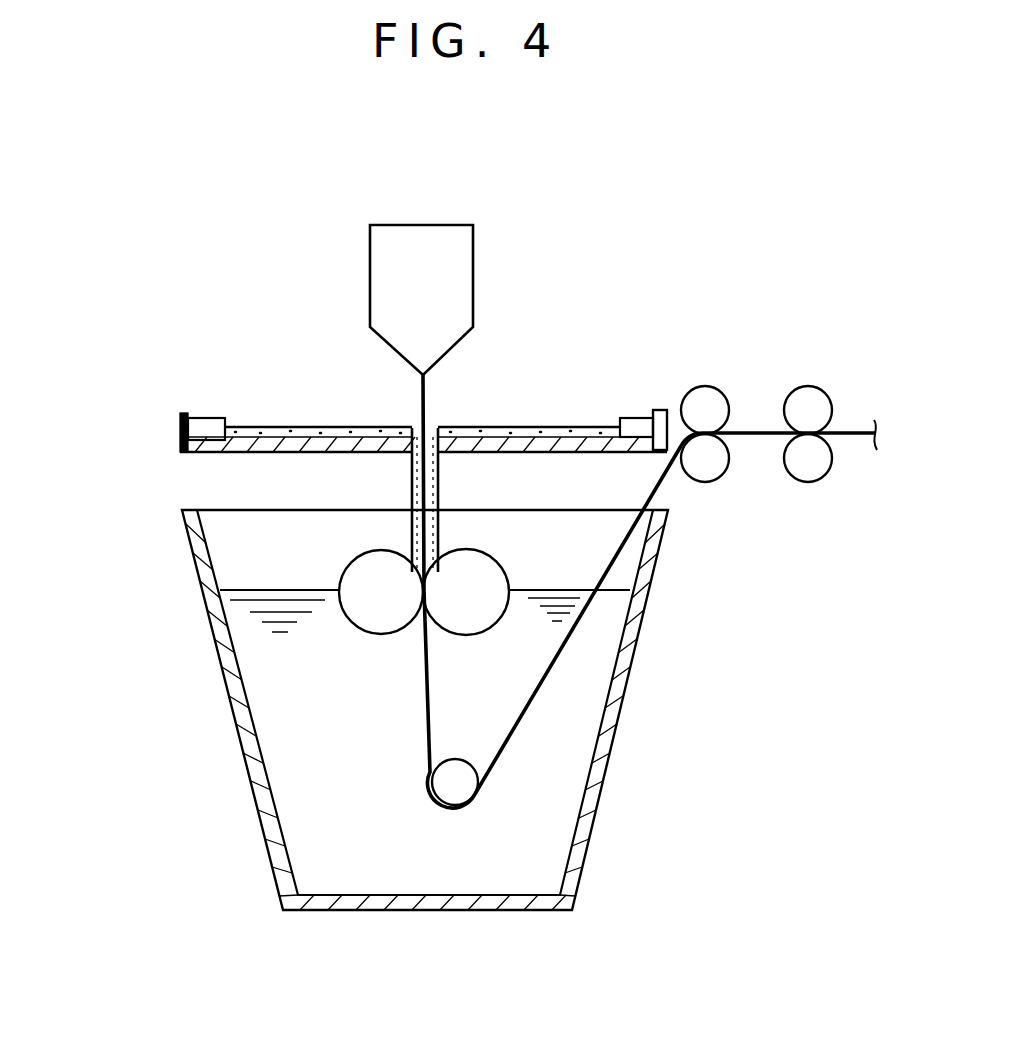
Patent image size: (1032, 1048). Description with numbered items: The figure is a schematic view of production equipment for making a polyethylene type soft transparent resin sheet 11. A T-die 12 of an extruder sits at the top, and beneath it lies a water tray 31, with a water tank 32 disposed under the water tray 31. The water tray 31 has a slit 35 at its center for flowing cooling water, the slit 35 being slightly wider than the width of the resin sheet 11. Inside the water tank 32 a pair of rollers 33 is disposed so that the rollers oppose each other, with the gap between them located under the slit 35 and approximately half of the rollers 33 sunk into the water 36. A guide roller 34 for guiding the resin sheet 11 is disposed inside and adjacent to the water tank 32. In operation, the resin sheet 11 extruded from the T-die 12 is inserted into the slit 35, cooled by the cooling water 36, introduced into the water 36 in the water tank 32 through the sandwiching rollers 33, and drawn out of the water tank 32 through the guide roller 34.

The resin sheet 11 is at (870, 430).
The T-die 12 is at (458, 255).
The water tray 31 is at (178, 428).
The water tank 32 is at (620, 697).
The pair of rollers 33 is at (470, 620).
The guide roller 34 is at (813, 393).
The slit 35 is at (410, 455).
The water 36 is at (550, 435).